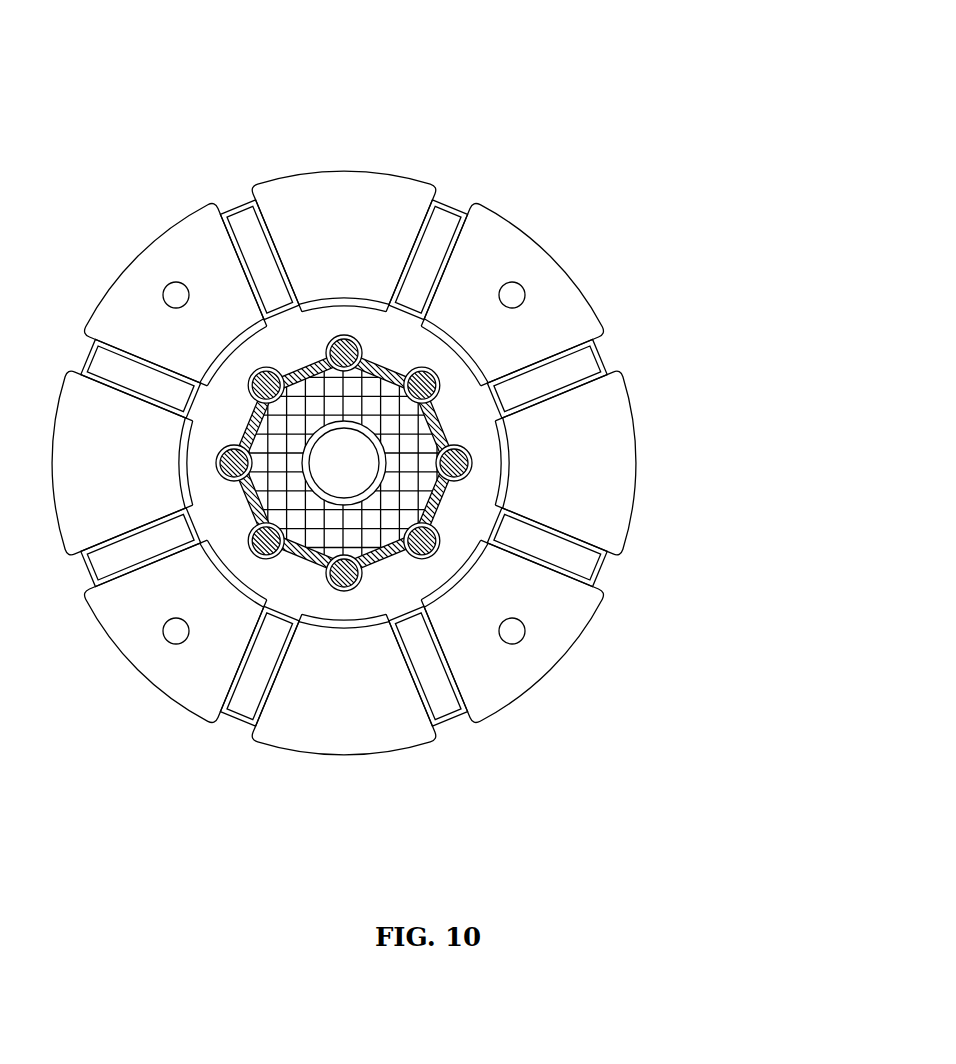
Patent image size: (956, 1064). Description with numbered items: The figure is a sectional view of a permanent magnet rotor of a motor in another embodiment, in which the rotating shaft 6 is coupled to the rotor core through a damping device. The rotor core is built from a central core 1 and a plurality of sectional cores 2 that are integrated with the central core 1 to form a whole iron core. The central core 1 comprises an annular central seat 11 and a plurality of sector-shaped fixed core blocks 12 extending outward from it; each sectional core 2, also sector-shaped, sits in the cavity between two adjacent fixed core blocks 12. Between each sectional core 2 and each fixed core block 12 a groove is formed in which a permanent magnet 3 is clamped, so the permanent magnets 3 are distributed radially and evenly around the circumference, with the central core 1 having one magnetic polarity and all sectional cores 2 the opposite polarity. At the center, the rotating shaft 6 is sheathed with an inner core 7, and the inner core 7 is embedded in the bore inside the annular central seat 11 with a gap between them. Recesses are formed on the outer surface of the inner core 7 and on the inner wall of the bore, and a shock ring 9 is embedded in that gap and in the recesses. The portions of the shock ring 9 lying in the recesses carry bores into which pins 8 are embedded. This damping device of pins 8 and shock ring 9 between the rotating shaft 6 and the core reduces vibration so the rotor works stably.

The central core 1 is at (588, 505).
The sectional core 2 is at (488, 233).
The permanent magnet 3 is at (568, 378).
The rotating shaft 6 is at (338, 465).
The inner core 7 is at (290, 517).
The pin 8 is at (390, 557).
The shock ring 9 is at (352, 585).
The annular central seat 11 is at (322, 330).
The fixed core block 12 is at (362, 248).